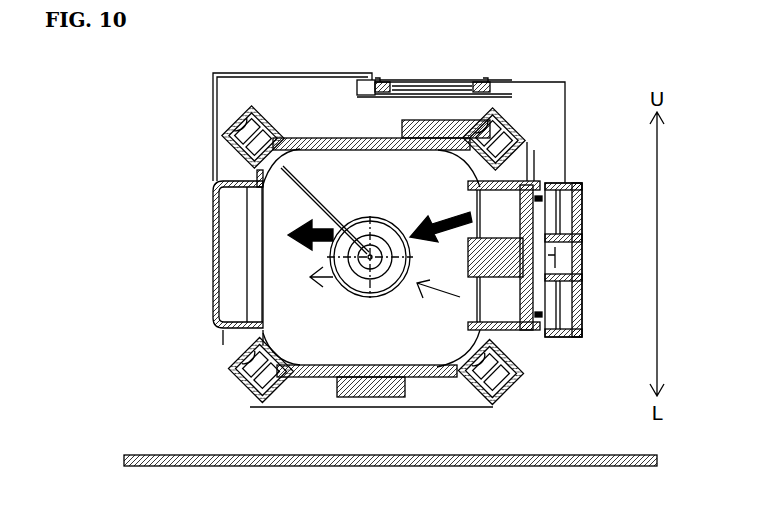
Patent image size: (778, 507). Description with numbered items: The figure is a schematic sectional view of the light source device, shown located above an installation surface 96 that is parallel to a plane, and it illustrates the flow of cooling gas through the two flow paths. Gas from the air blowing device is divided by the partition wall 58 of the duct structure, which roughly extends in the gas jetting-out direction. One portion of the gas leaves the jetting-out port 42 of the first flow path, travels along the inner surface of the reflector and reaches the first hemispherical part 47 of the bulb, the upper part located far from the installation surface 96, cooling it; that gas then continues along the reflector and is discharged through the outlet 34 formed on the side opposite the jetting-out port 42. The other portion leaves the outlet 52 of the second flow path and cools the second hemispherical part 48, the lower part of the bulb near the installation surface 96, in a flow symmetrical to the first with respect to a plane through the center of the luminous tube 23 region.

The shaft 23 is at (364, 228).
The outlet 34 is at (237, 237).
The jetting-out port 42 is at (510, 197).
The first hemispherical part 47 is at (385, 228).
The second hemispherical part 48 is at (353, 280).
The outlet 52 is at (500, 313).
The partition wall 58 is at (503, 258).
The installation surface 96 is at (581, 456).